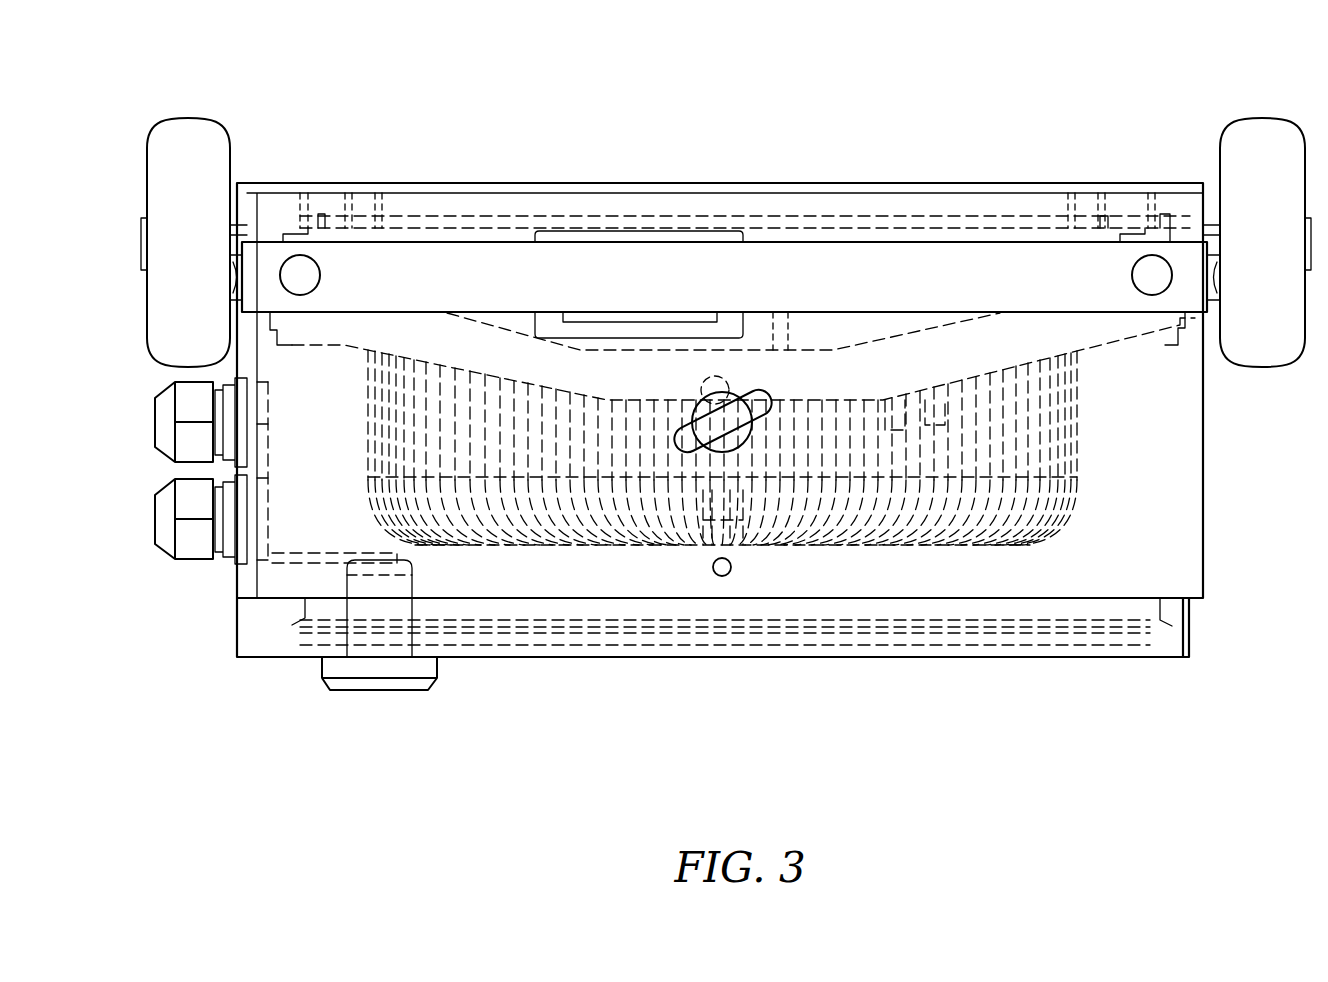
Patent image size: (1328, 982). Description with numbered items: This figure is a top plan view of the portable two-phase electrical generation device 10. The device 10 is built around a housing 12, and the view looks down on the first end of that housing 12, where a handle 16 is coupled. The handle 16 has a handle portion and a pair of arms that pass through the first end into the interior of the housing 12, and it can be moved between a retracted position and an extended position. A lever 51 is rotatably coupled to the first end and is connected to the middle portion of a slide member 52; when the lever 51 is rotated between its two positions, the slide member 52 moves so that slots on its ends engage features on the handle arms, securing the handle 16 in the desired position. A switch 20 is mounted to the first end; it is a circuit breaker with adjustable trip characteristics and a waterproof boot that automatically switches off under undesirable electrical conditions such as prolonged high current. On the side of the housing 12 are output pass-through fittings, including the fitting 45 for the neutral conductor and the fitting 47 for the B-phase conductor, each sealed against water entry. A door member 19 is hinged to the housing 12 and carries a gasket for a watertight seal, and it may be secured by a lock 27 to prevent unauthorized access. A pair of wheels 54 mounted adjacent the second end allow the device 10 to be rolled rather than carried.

The portable two-phase electrical generation device 10 is at (304, 759).
The housing 12 is at (1203, 470).
The handle 16 is at (893, 253).
The door member 19 is at (972, 657).
The switch 20 is at (585, 240).
The lock 27 is at (380, 690).
The output pass-through fitting 45 is at (165, 558).
The output pass-through fitting 47 is at (165, 386).
The lever 51 is at (728, 445).
The slide member 52 is at (1100, 350).
The wheels 54 is at (147, 168).